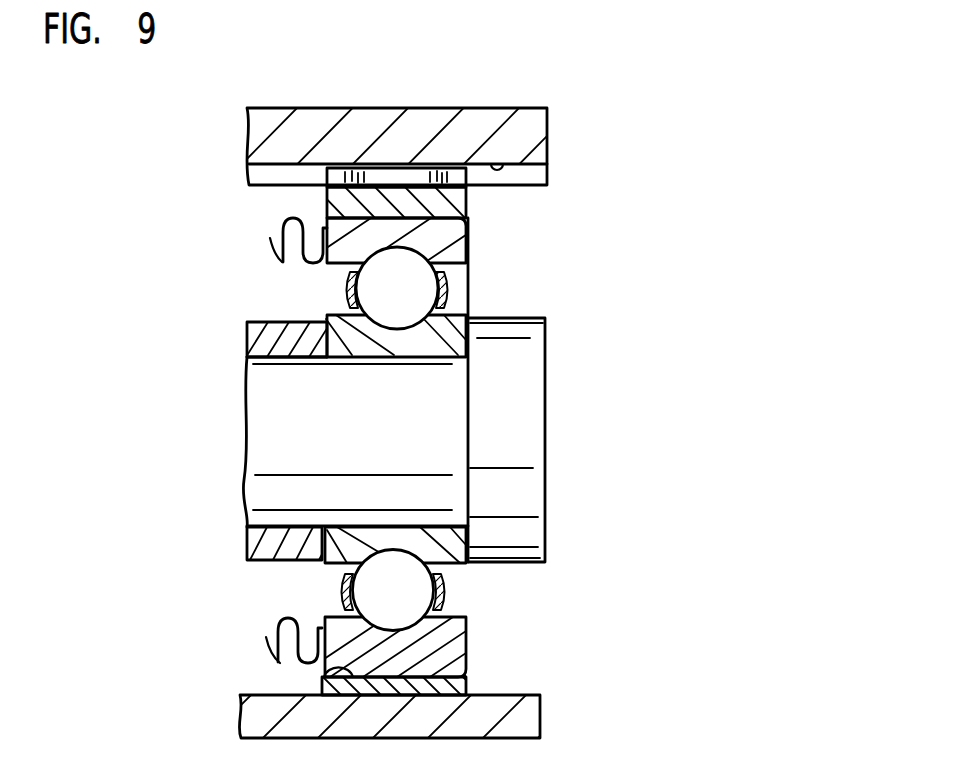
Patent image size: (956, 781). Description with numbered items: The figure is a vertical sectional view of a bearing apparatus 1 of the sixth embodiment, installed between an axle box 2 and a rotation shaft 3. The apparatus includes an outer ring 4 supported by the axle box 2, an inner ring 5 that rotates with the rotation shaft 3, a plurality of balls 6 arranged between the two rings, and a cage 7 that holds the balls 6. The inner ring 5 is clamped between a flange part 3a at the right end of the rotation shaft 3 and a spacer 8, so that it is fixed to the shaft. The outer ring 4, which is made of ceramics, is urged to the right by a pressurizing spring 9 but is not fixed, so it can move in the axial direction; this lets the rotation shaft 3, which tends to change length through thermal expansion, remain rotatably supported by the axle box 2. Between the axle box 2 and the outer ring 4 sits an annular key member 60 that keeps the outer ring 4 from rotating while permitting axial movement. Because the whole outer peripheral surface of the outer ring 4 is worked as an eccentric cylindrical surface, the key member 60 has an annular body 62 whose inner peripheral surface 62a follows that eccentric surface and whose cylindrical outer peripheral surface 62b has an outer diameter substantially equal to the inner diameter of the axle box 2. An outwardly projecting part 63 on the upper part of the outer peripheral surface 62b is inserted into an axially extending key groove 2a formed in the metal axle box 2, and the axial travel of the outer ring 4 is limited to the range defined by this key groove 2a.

The bearing apparatus 1 is at (500, 248).
The axle box 2 is at (548, 115).
The key groove 2a is at (497, 160).
The rotation shaft 3 is at (433, 390).
The flange part 3a is at (530, 350).
The outer ring 4 is at (470, 240).
The inner ring 5 is at (447, 347).
The balls 6 is at (440, 290).
The cage 7 is at (446, 303).
The spacer 8 is at (262, 340).
The pressurizing spring 9 is at (275, 240).
The key member 60 is at (346, 423).
The annular body 62 is at (375, 190).
The inner peripheral surface 62a is at (325, 668).
The outer peripheral surface 62b is at (372, 697).
The outwardly projecting part 63 is at (405, 177).